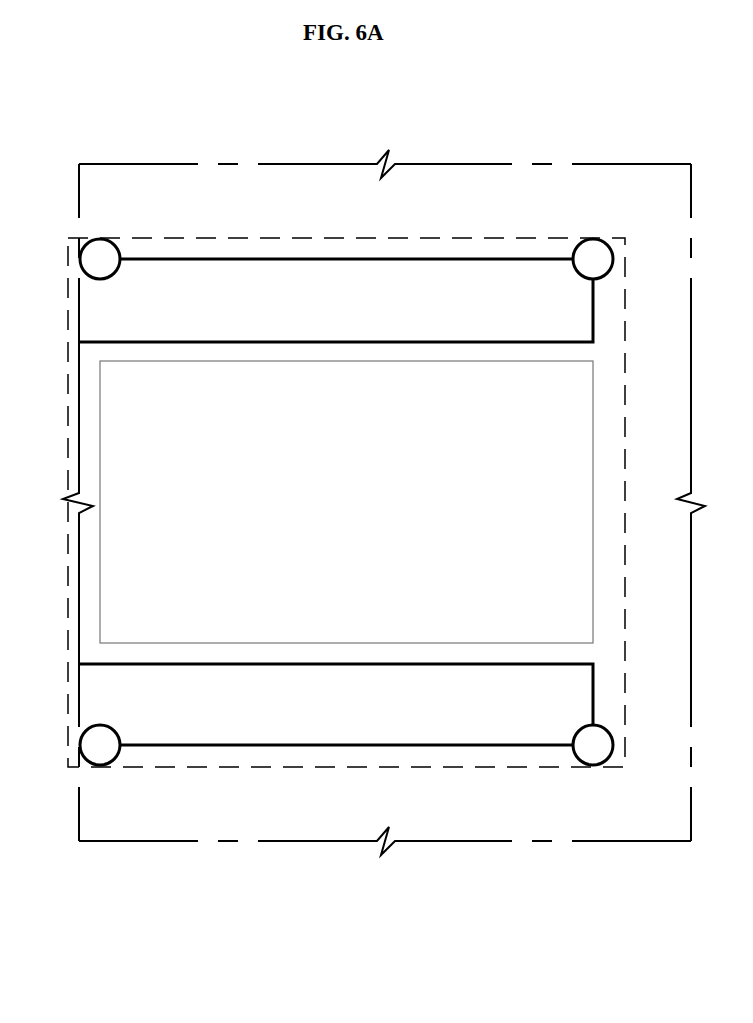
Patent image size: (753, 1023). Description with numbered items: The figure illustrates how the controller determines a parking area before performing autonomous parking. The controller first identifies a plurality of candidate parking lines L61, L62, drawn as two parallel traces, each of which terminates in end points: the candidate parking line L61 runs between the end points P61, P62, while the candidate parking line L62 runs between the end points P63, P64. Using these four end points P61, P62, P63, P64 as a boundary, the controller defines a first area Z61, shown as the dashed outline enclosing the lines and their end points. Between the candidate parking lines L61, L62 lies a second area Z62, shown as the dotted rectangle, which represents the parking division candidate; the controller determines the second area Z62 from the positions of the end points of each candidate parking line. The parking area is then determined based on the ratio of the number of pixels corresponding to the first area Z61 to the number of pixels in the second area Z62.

The end point P61 is at (90, 259).
The end point P62 is at (603, 260).
The end point P63 is at (90, 745).
The end point P64 is at (603, 746).
The candidate parking line L61 is at (313, 275).
The candidate parking line L62 is at (315, 730).
The first area Z61 is at (590, 240).
The second area Z62 is at (572, 418).